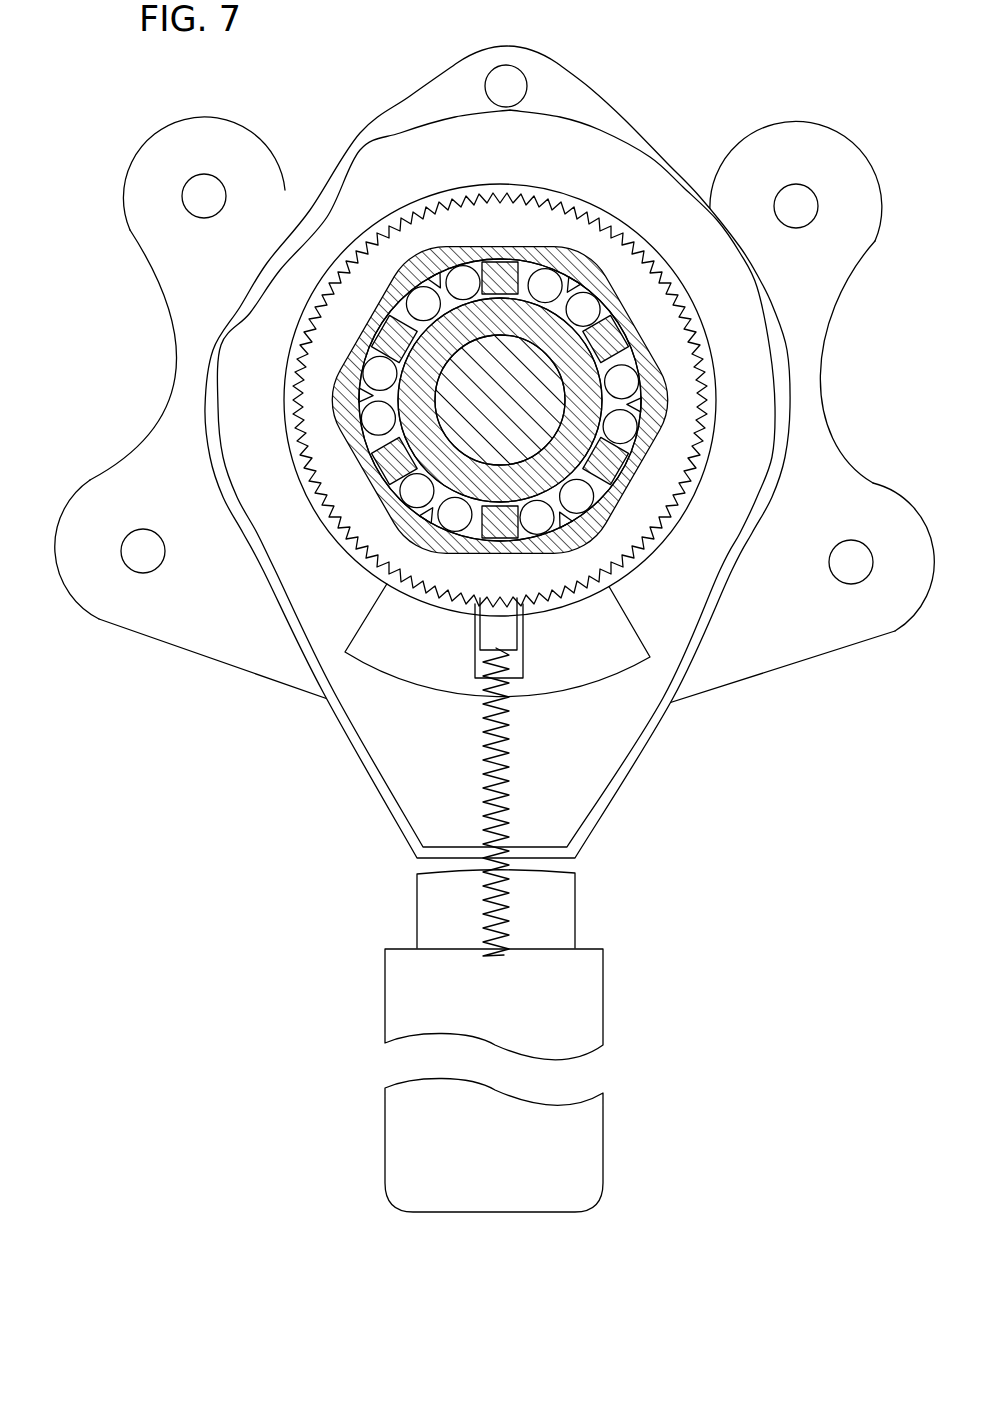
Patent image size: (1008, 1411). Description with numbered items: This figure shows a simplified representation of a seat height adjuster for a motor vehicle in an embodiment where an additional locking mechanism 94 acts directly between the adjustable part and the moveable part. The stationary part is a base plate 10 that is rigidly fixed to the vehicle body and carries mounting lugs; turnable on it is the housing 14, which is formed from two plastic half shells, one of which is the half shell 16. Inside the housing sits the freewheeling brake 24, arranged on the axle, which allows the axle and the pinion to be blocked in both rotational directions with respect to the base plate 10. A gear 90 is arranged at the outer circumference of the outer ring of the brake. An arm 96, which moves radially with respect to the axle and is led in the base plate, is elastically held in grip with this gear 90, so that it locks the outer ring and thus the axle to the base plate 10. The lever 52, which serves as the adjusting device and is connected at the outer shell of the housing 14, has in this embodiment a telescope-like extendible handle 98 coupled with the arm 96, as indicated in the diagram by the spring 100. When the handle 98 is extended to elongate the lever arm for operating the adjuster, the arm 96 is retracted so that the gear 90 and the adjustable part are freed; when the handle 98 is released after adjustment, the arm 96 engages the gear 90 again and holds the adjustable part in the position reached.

The base plate 10 is at (860, 453).
The housing 14 is at (356, 763).
The half shell 16 is at (623, 770).
The freewheeling brake 24 is at (350, 315).
The lever 52 is at (568, 922).
The gear 90 is at (375, 543).
The additional locking mechanism 94 is at (560, 651).
The arm 96 is at (485, 628).
The handle 98 is at (595, 1022).
The spring 100 is at (507, 803).